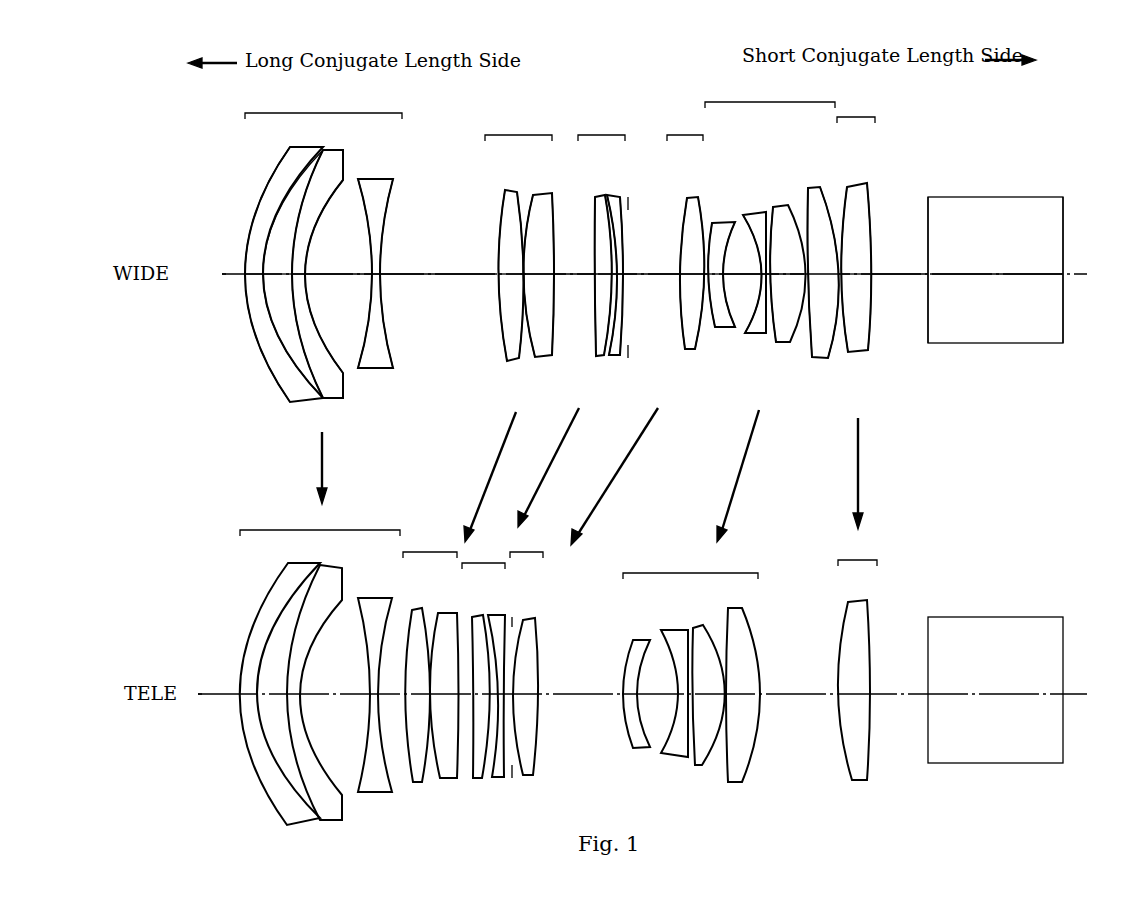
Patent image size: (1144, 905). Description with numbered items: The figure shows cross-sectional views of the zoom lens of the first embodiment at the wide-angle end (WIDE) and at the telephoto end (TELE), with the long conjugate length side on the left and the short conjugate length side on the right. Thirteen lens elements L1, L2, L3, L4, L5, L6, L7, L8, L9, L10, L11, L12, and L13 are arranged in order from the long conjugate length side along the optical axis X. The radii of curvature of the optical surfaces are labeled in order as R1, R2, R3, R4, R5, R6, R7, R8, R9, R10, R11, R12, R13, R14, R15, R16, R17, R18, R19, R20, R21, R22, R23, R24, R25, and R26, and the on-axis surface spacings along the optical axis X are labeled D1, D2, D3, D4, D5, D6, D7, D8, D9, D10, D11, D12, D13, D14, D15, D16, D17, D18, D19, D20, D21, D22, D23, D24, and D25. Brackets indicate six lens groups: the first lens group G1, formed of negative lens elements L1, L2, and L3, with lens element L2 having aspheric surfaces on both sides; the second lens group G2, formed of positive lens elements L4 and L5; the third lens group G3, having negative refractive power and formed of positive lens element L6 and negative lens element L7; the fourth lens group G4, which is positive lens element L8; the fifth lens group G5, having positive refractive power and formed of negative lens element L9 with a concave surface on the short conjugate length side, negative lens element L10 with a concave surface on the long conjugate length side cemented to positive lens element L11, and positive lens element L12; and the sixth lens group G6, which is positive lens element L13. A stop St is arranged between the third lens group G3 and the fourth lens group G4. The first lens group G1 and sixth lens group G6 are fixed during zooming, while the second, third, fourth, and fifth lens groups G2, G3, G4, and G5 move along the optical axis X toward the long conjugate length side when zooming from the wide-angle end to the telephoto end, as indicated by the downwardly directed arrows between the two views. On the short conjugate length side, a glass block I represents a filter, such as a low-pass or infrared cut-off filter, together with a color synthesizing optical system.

The first lens group G1 is at (321, 314).
The second lens group G2 is at (477, 336).
The third lens group G3 is at (543, 342).
The fourth lens group G4 is at (606, 336).
The fifth lens group G5 is at (729, 330).
The sixth lens group G6 is at (857, 331).
The lens element L1 is at (304, 150).
The lens element L2 is at (340, 151).
The lens element L3 is at (378, 188).
The lens element L4 is at (503, 191).
The lens element L5 is at (548, 194).
The lens element L6 is at (598, 196).
The lens element L7 is at (613, 195).
The lens element L8 is at (685, 198).
The lens element L9 is at (726, 252).
The lens element L10 is at (757, 213).
The lens element L11 is at (806, 238).
The lens element L12 is at (836, 178).
The lens element L13 is at (868, 182).
The radius of curvature R1 is at (275, 188).
The radius of curvature R2 is at (268, 225).
The radius of curvature R3 is at (306, 226).
The radius of curvature R4 is at (312, 255).
The radius of curvature R5 is at (368, 262).
The radius of curvature R6 is at (390, 229).
The radius of curvature R7 is at (498, 261).
The radius of curvature R8 is at (517, 214).
The radius of curvature R9 is at (527, 204).
The radius of curvature R10 is at (553, 245).
The radius of curvature R11 is at (599, 236).
The radius of curvature R12 is at (604, 211).
The radius of curvature R13 is at (629, 211).
The radius of curvature R14 is at (626, 233).
The radius of curvature R15 is at (687, 205).
The radius of curvature R16 is at (711, 223).
The radius of curvature R17 is at (737, 222).
The radius of curvature R18 is at (747, 212).
The radius of curvature R19 is at (778, 205).
The radius of curvature R20 is at (791, 212).
The radius of curvature R21 is at (808, 190).
The radius of curvature R22 is at (860, 193).
The radius of curvature R23 is at (846, 213).
The radius of curvature R24 is at (872, 233).
The radius of curvature R25 is at (929, 212).
The radius of curvature R26 is at (1066, 232).
The on-axis surface spacing D1 is at (245, 265).
The on-axis surface spacing D2 is at (266, 288).
The on-axis surface spacing D3 is at (312, 288).
The on-axis surface spacing D4 is at (341, 290).
The on-axis surface spacing D5 is at (381, 288).
The on-axis surface spacing D6 is at (428, 279).
The on-axis surface spacing D7 is at (503, 290).
The on-axis surface spacing D8 is at (512, 296).
The on-axis surface spacing D9 is at (552, 288).
The on-axis surface spacing D10 is at (589, 285).
The on-axis surface spacing D11 is at (615, 300).
The on-axis surface spacing D12 is at (625, 290).
The on-axis surface spacing D13 is at (645, 280).
The on-axis surface spacing D14 is at (672, 303).
The on-axis surface spacing D15 is at (704, 345).
The on-axis surface spacing D16 is at (738, 335).
The on-axis surface spacing D17 is at (722, 282).
The on-axis surface spacing D18 is at (768, 345).
The on-axis surface spacing D19 is at (796, 355).
The on-axis surface spacing D20 is at (803, 350).
The on-axis surface spacing D21 is at (842, 355).
The on-axis surface spacing D22 is at (865, 274).
The on-axis surface spacing D23 is at (862, 285).
The on-axis surface spacing D24 is at (878, 292).
The on-axis surface spacing D25 is at (998, 270).
The glass block I is at (1020, 199).
The stop St is at (572, 502).
The optical axis X is at (222, 274).